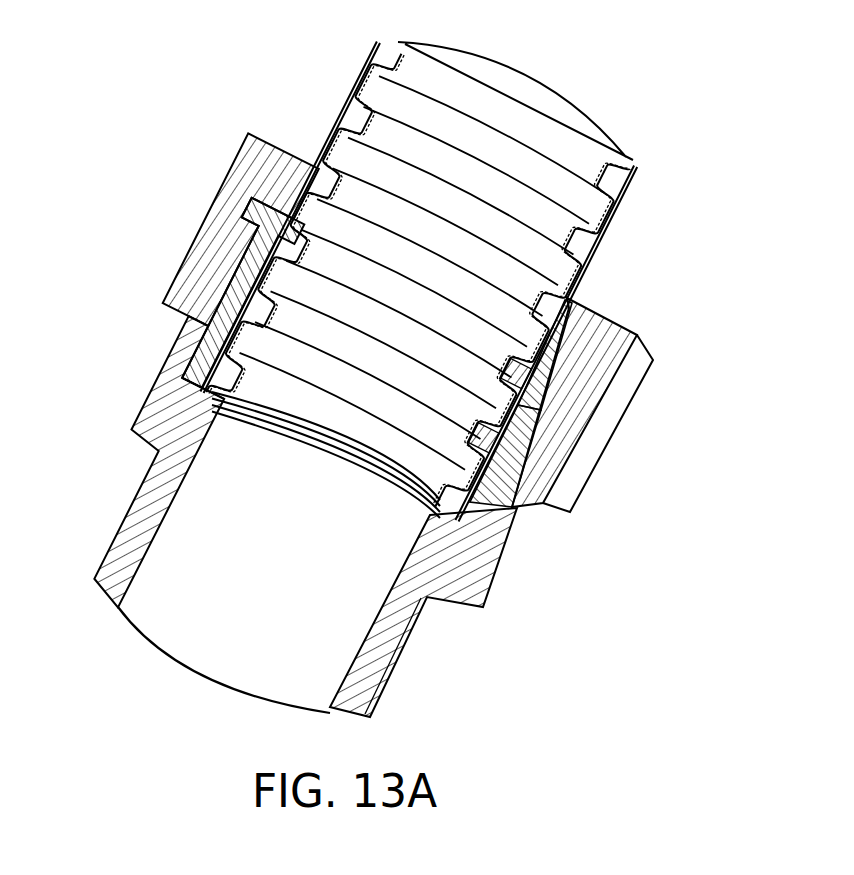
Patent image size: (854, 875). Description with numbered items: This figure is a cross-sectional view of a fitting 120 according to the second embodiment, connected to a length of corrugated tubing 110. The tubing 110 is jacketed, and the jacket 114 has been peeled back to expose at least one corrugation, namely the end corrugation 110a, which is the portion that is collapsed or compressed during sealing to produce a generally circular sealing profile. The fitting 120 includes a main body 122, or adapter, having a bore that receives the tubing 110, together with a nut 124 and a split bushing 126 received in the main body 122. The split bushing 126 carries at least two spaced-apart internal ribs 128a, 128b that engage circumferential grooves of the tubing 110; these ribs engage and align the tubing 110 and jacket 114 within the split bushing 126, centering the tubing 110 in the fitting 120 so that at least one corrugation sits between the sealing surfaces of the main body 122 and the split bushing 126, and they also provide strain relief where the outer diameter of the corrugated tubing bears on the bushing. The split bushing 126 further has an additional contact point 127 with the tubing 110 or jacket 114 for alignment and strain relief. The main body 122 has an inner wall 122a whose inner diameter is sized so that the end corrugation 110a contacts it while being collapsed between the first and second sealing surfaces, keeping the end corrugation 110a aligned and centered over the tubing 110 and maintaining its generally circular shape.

The tubing 110 is at (418, 264).
The end corrugation 110a is at (218, 402).
The jacket 114 is at (305, 224).
The fitting 120 is at (385, 425).
The main body 122 is at (287, 516).
The inner wall 122a is at (203, 388).
The nut 124 is at (228, 200).
The split bushing 126 is at (237, 302).
The contact point 127 is at (537, 471).
The internal rib 128a is at (520, 510).
The internal rib 128b is at (550, 382).